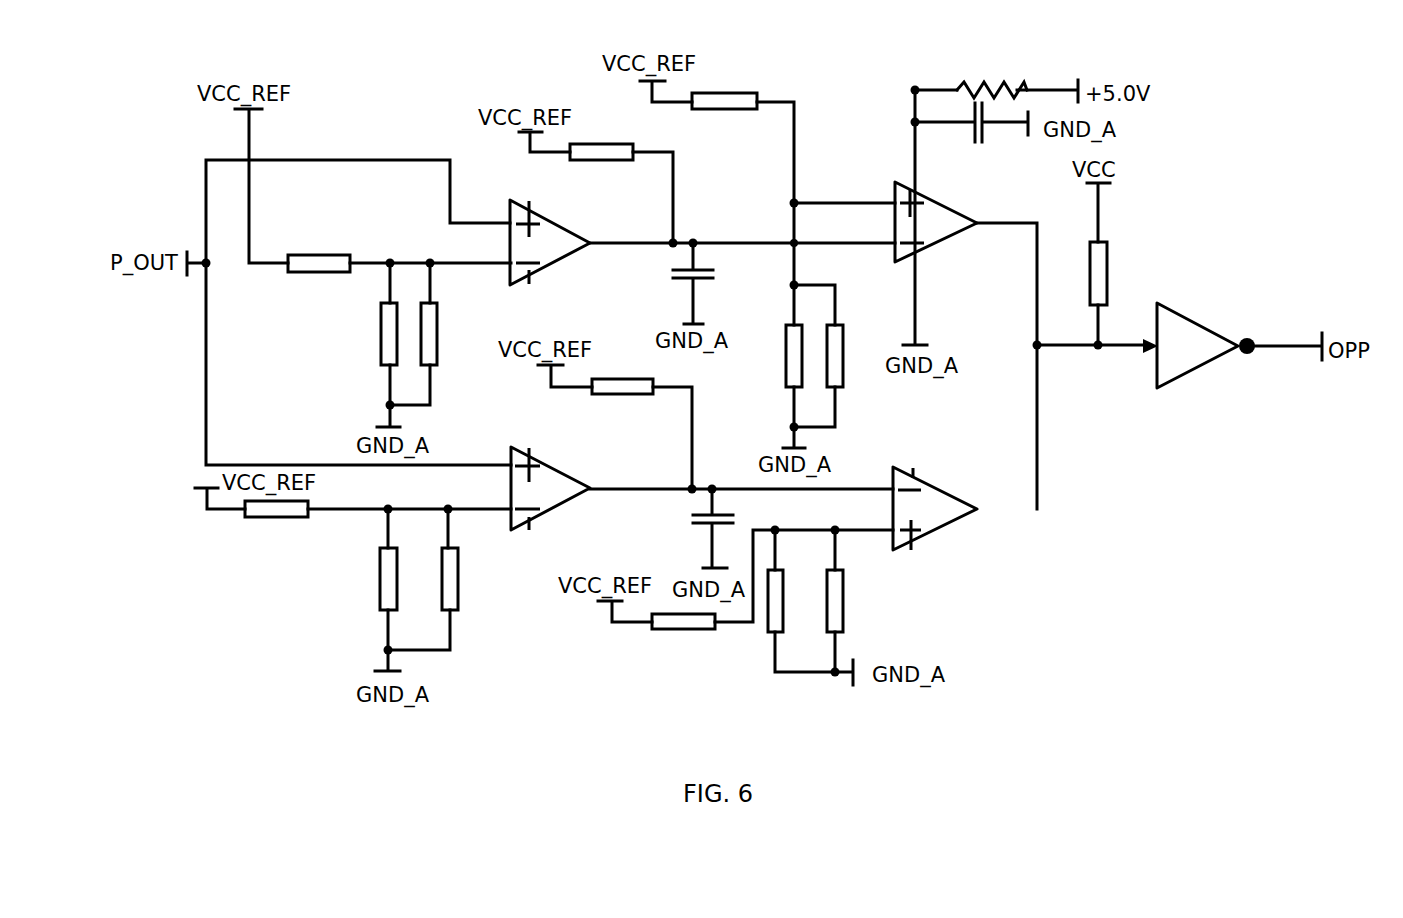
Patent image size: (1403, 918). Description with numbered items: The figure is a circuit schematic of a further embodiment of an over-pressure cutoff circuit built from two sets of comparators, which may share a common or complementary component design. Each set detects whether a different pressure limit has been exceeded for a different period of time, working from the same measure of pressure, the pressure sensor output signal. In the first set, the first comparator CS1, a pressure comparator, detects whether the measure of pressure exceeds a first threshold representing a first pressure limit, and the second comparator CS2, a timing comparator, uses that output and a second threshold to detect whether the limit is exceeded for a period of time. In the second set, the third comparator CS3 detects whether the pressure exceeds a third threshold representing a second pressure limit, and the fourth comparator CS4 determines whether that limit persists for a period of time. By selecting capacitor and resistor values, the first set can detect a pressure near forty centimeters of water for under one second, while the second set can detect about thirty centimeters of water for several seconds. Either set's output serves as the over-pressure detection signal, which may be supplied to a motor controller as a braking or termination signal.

The first comparator CS1 is at (545, 240).
The second comparator CS2 is at (930, 218).
The third comparator CS3 is at (548, 483).
The fourth comparator CS4 is at (923, 495).